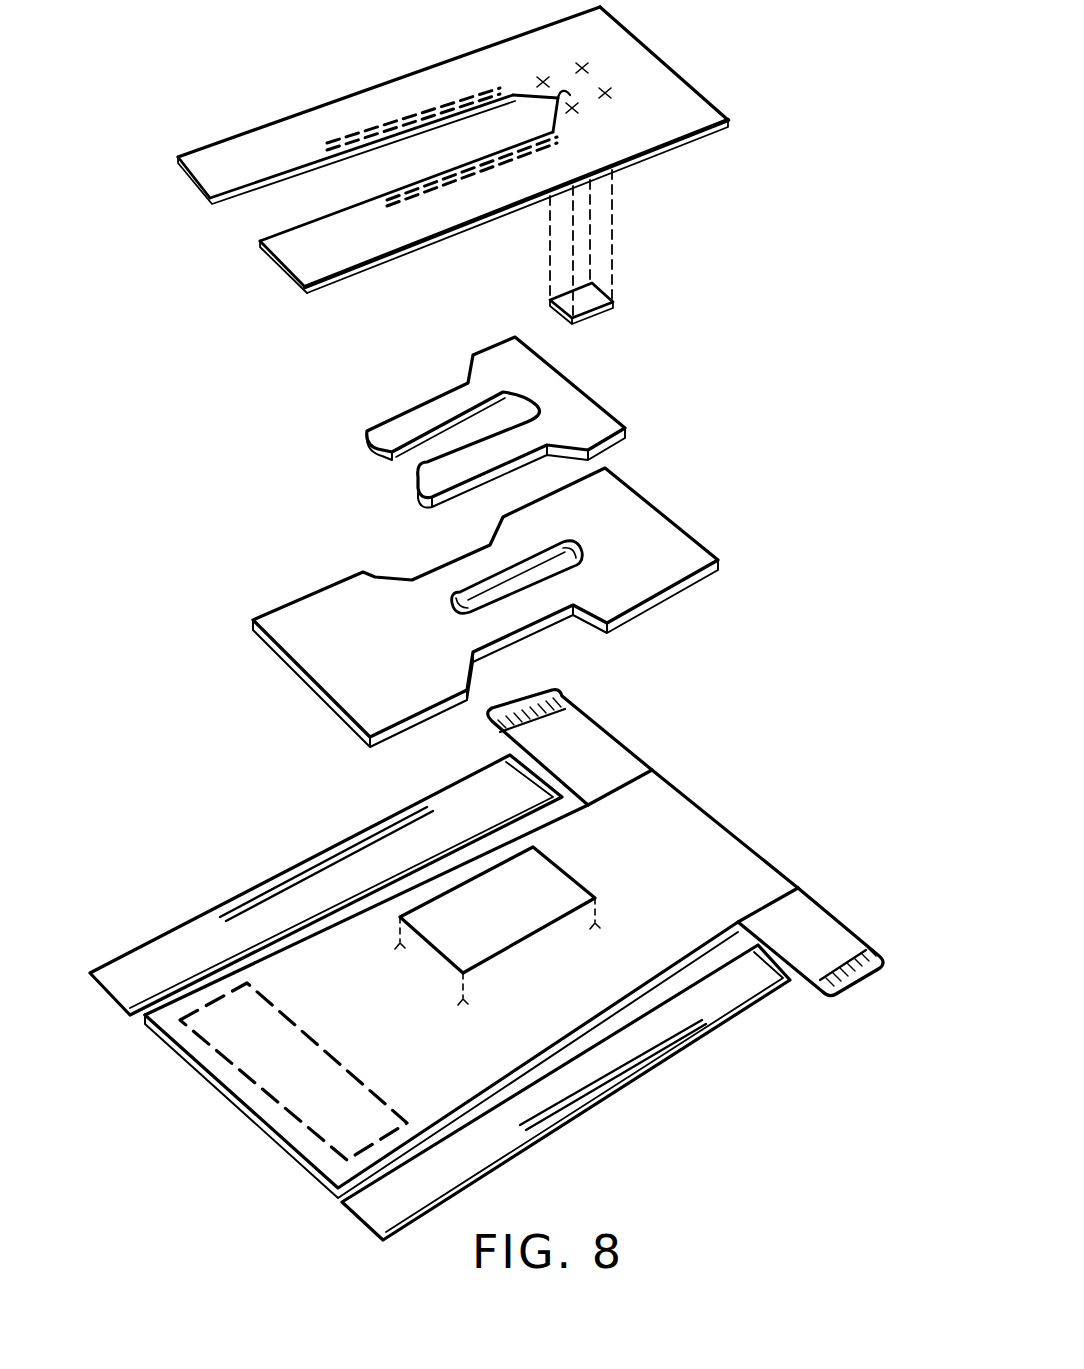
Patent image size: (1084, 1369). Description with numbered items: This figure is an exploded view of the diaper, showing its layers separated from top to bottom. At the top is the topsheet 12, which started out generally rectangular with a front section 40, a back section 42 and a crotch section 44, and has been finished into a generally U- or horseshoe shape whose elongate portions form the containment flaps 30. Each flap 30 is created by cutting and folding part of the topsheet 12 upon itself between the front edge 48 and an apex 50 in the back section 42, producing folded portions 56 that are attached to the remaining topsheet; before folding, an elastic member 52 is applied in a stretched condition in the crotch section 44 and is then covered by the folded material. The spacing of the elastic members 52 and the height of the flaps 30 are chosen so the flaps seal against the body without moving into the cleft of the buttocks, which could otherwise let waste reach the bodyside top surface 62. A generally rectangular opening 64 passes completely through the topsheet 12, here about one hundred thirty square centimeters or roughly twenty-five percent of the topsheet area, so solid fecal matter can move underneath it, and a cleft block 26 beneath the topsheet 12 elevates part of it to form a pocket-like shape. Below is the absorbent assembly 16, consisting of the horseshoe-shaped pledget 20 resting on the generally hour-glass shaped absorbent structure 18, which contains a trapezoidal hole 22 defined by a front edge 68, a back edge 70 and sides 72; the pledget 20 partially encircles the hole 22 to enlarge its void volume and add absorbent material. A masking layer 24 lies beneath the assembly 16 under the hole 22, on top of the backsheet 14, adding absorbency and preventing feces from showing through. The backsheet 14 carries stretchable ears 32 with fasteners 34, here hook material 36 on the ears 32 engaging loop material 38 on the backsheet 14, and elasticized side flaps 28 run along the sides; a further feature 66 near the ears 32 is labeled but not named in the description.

The topsheet 12 is at (687, 107).
The backsheet 14 is at (710, 840).
The absorbent assembly 16 is at (270, 413).
The absorbent structure 18 is at (678, 550).
The pledget 20 is at (560, 395).
The hole 22 is at (558, 563).
The masking layer 24 is at (560, 887).
The cleft block 26 is at (612, 293).
The elasticized side flaps 28 is at (195, 933).
The containment flaps 30 is at (383, 117).
The stretchable ears 32 is at (600, 750).
The fasteners 34 is at (297, 1117).
The hook material 36 is at (560, 700).
The loop material 38 is at (217, 1050).
The front section 40 is at (213, 168).
The back section 42 is at (603, 32).
The crotch section 44 is at (440, 80).
The front edge 48 is at (200, 183).
The apex 50 is at (570, 95).
The elastic member 52 is at (460, 90).
The folded portions 56 is at (207, 205).
The top surface 62 is at (642, 75).
The opening 64 is at (347, 160).
The fold line 66 is at (687, 793).
The front edge 68 is at (473, 607).
The back edge 70 is at (575, 565).
The sides 72 is at (530, 588).